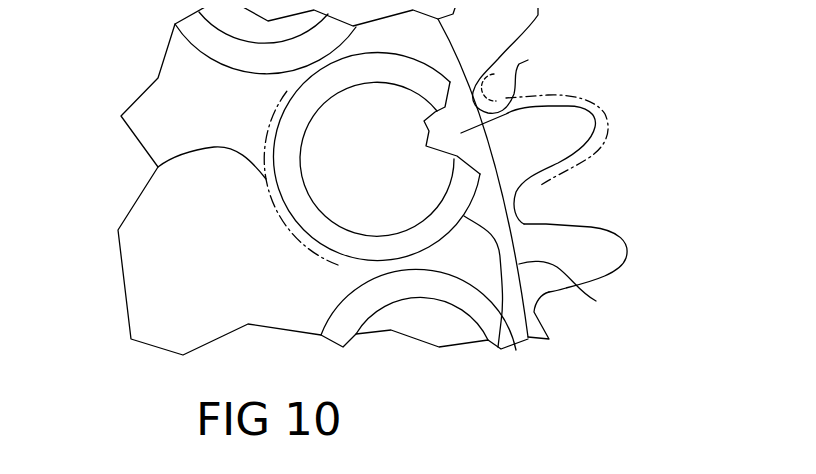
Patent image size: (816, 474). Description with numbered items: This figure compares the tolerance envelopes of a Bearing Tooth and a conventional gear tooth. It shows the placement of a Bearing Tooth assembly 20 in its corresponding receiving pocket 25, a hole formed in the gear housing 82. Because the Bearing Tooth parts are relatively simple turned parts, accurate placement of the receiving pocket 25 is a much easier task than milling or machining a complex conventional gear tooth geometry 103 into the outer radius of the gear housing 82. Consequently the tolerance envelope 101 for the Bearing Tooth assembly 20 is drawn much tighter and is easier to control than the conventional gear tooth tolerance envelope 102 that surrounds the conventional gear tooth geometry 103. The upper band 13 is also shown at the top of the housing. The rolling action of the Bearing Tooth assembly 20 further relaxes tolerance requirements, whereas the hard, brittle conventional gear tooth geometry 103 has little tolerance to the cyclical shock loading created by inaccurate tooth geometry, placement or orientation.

The arcuate guide band 13 is at (242, 41).
The Bearing Tooth assembly 20 is at (490, 334).
The receiving pocket 25 is at (520, 52).
The gear housing 82 is at (588, 293).
The tolerance envelope 101 is at (143, 160).
The conventional gear tooth tolerance envelope 102 is at (579, 141).
The conventional gear tooth geometry 103 is at (571, 166).